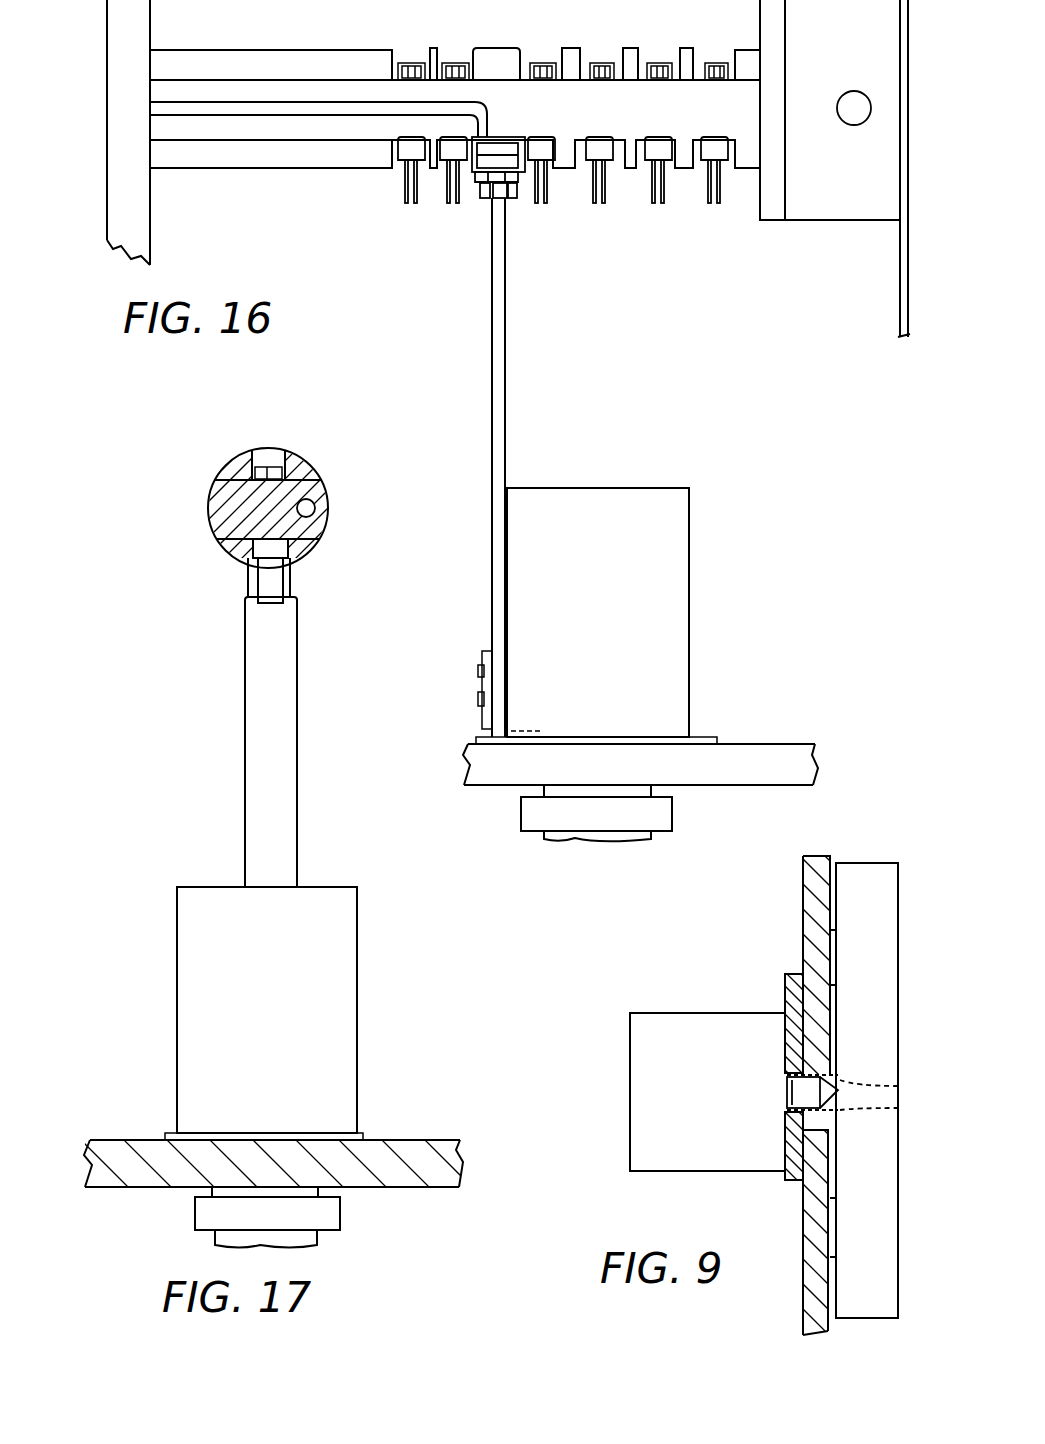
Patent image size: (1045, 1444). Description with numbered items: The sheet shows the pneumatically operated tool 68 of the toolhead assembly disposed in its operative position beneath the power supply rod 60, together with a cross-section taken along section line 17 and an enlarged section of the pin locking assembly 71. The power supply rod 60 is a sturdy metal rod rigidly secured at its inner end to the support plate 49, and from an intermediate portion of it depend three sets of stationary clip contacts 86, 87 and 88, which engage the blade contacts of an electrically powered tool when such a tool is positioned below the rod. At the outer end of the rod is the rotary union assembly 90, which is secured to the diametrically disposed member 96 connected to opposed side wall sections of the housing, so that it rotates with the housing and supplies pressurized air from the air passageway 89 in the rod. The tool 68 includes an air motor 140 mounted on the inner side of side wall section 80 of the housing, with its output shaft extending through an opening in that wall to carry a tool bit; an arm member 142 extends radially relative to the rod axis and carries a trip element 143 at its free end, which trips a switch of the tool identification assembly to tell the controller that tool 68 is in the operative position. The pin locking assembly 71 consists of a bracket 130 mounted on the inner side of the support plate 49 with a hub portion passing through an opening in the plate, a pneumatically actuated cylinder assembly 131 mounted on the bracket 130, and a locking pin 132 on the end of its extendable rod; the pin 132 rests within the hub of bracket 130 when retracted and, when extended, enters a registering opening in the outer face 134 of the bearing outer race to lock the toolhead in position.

In FIG. 16, the support plate 49 is at (152, 240).
In FIG. 9, the support plate 49 is at (803, 903).
In FIG. 16, the power supply rod 60 is at (507, 42).
In FIG. 16, the section line 17— 17 is at (730, 50).
In FIG. 16, the stationary clip contact 86 is at (463, 240).
In FIG. 16, the stationary clip contact 87 is at (615, 208).
In FIG. 16, the stationary clip contact 88 is at (732, 208).
In FIG. 17, the stationary clip contact 88 is at (276, 586).
In FIG. 16, the trip element 143 is at (505, 198).
In FIG. 16, the arm member 142 is at (507, 402).
In FIG. 17, the arm member 142 is at (333, 752).
In FIG. 16, the air motor 140 is at (691, 632).
In FIG. 17, the air motor 140 is at (357, 978).
In FIG. 16, the pneumatically operated tool 68 is at (486, 596).
In FIG. 17, the pneumatically operated tool 68 is at (209, 869).
In FIG. 16, the side wall section 80 is at (771, 786).
In FIG. 17, the side wall section 80 is at (428, 1140).
In FIG. 16, the rotary union assembly 90 is at (845, 222).
In FIG. 16, the diametrically disposed member 96 is at (900, 293).
In FIG. 17, the air passageway 89 is at (315, 511).
In FIG. 9, the pin locking assembly 71 is at (679, 1004).
In FIG. 9, the bracket 130 is at (786, 989).
In FIG. 9, the pneumatically actuated cylinder assembly 131 is at (733, 1160).
In FIG. 9, the locking pin 132 is at (805, 1090).
In FIG. 9, the outer face 134 is at (821, 1112).